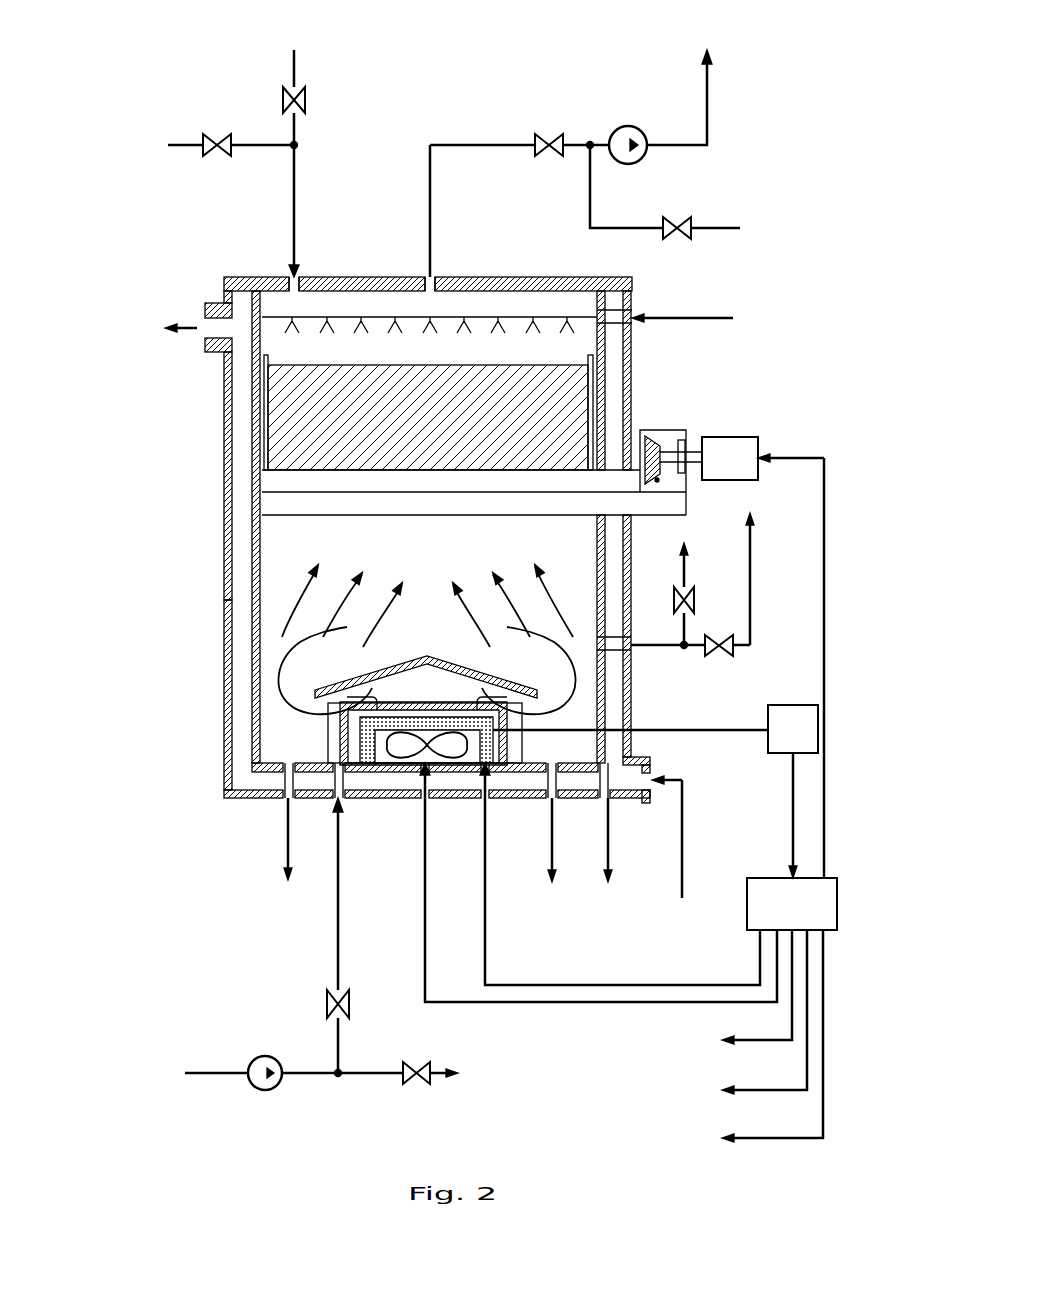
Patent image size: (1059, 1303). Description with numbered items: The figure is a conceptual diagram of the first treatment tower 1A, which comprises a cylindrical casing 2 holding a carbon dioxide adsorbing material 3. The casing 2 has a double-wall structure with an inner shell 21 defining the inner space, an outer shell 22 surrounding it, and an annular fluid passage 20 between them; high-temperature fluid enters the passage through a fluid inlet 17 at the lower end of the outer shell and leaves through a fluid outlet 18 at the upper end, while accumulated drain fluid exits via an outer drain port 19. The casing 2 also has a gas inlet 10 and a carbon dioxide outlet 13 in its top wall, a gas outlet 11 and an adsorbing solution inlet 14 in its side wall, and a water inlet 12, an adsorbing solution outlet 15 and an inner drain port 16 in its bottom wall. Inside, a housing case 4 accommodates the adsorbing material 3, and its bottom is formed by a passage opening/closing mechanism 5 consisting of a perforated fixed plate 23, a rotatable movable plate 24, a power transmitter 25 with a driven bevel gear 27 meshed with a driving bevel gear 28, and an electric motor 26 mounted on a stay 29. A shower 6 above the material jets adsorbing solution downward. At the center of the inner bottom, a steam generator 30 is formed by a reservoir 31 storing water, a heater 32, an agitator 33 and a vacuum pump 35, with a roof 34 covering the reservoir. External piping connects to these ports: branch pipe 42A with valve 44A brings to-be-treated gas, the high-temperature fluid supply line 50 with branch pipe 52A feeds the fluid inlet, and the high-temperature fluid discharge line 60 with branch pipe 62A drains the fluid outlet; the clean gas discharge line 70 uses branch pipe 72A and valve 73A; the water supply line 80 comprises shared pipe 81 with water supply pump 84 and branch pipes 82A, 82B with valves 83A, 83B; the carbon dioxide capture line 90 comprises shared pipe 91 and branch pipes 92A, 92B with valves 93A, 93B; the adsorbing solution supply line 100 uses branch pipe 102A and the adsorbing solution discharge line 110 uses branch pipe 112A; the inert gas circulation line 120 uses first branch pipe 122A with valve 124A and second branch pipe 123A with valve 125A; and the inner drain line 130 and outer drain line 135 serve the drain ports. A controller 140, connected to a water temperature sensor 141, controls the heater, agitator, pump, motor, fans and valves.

The first treatment tower 1A is at (175, 788).
The casing 2 is at (220, 606).
The carbon dioxide adsorbing material 3 is at (283, 435).
The housing case 4 is at (258, 403).
The passage opening/closing mechanism 5 is at (280, 530).
The shower 6 is at (482, 310).
The gas inlet 10 is at (307, 273).
The gas outlet 11 is at (615, 648).
The water inlet 12 is at (343, 778).
The carbon dioxide outlet 13 is at (428, 277).
The adsorbing solution inlet 14 is at (610, 307).
The adsorbing solution outlet 15 is at (283, 778).
The inner drain port 16 is at (548, 785).
The fluid inlet 17 is at (635, 753).
The fluid outlet 18 is at (220, 327).
The outer drain port 19 is at (603, 785).
The fluid passage 20 is at (244, 657).
The inner shell 21 is at (252, 688).
The outer shell 22 is at (279, 711).
The fixed plate 23 is at (273, 503).
The movable plate 24 is at (273, 480).
The power transmitter 25 is at (723, 372).
The electric motor 26 is at (750, 437).
The driven bevel gear 27 is at (653, 433).
The driving bevel gear 28 is at (680, 437).
The stay 29 is at (686, 505).
The steam generator 30 is at (328, 705).
The reservoir 31 is at (340, 720).
The heater 32 is at (422, 773).
The agitator 33 is at (482, 773).
The roof 34 is at (432, 657).
The vacuum pump 35 is at (608, 132).
The branch pipe 42A is at (250, 150).
The valve 44A is at (215, 133).
The high-temperature fluid supply line 50 is at (675, 770).
The branch pipe 52A is at (683, 802).
The high-temperature fluid discharge line 60 is at (190, 135).
The branch pipe 62A is at (182, 332).
The clean gas discharge line 70 is at (695, 578).
The branch pipe 72A is at (680, 636).
The valve 73A is at (697, 600).
The water supply line 80 is at (205, 1065).
The shared pipe 81 is at (297, 1077).
The branch pipe 82A is at (335, 1035).
The branch pipe 82B is at (367, 1078).
The valve 83A is at (335, 1003).
The valve 83B is at (420, 1083).
The water supply pump 84 is at (250, 1085).
The carbon dioxide capture line 90 is at (438, 137).
The shared pipe 91 is at (680, 142).
The branch pipe 92A is at (478, 142).
The branch pipe 92B is at (588, 172).
The valve 93A is at (548, 135).
The valve 93B is at (677, 218).
The adsorbing solution supply line 100 is at (676, 308).
The branch pipe 102A is at (693, 312).
The adsorbing solution discharge line 110 is at (285, 833).
The branch pipe 112A is at (280, 853).
The inert gas circulation line 120 is at (285, 65).
The first branch pipe 122A is at (750, 620).
The second branch pipe 123A is at (297, 135).
The valve 124A is at (722, 652).
The valve 125A is at (303, 100).
The inner drain line 130 is at (547, 858).
The outer drain line 135 is at (603, 858).
The controller 140 is at (757, 878).
The water temperature sensor 141 is at (768, 740).